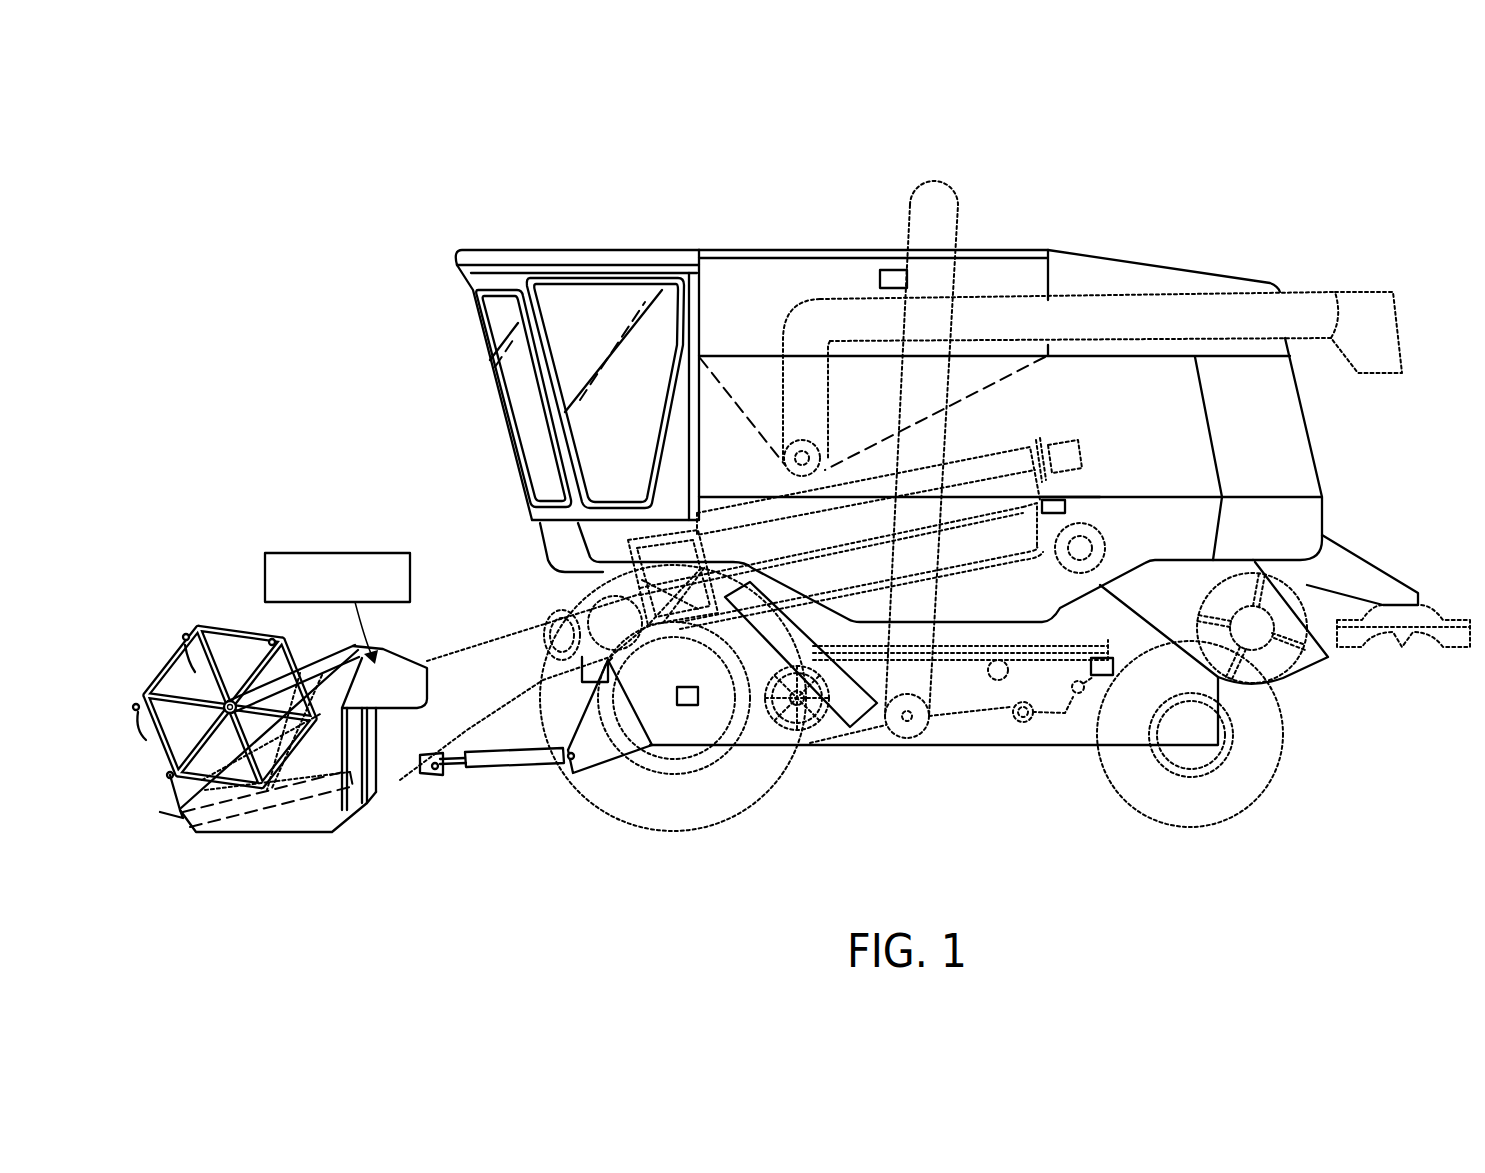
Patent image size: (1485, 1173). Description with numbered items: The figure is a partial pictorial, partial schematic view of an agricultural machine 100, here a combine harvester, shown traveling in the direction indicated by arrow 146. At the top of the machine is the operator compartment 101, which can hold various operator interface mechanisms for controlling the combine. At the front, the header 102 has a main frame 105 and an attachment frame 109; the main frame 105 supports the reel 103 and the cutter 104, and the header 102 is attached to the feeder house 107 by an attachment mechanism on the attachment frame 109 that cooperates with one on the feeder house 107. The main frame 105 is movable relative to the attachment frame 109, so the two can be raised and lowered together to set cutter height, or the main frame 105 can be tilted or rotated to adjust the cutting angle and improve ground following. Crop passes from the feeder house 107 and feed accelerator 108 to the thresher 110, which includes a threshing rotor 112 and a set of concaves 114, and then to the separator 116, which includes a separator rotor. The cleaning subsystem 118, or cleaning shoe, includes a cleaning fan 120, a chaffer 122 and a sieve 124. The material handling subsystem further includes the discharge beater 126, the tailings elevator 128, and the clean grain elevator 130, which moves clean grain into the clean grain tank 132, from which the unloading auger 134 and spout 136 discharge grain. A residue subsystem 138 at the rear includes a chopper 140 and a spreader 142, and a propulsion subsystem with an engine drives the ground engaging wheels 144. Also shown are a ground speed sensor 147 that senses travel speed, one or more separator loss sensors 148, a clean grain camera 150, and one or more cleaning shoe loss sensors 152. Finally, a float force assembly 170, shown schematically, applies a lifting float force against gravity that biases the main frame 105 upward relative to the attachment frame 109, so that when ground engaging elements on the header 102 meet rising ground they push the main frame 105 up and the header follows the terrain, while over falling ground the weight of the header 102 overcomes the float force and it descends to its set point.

The agricultural machine 100 is at (1322, 115).
The operator compartment 101 is at (575, 250).
The header 102 is at (261, 740).
The reel 103 is at (170, 660).
The cutter 104 is at (168, 820).
The main frame 105 is at (310, 832).
The feeder house 107 is at (467, 636).
The feed accelerator 108 is at (590, 607).
The attachment frame 109 is at (360, 812).
The thresher 110 is at (875, 495).
The threshing rotor 112 is at (1035, 432).
The concaves 114 is at (1053, 525).
The separator 116 is at (963, 568).
The cleaning subsystem 118 is at (1106, 692).
The cleaning fan 120 is at (760, 715).
The chaffer 122 is at (1100, 642).
The sieve 124 is at (1020, 657).
The discharge beater 126 is at (1105, 532).
The tailings elevator 128 is at (850, 722).
The clean grain elevator 130 is at (932, 677).
The clean grain tank 132 is at (738, 345).
The unloading auger 134 is at (820, 460).
The spout 136 is at (1368, 292).
The residue subsystem 138 is at (1383, 548).
The chopper 140 is at (1262, 685).
The spreader 142 is at (1362, 652).
The ground engaging wheels 144 is at (583, 797).
The arrow 146 is at (418, 464).
The ground speed sensor 147 is at (685, 706).
The separator loss sensors 148 is at (1090, 497).
The clean grain camera 150 is at (884, 270).
The cleaning shoe loss sensors 152 is at (1113, 668).
The float force assembly 170 is at (282, 542).